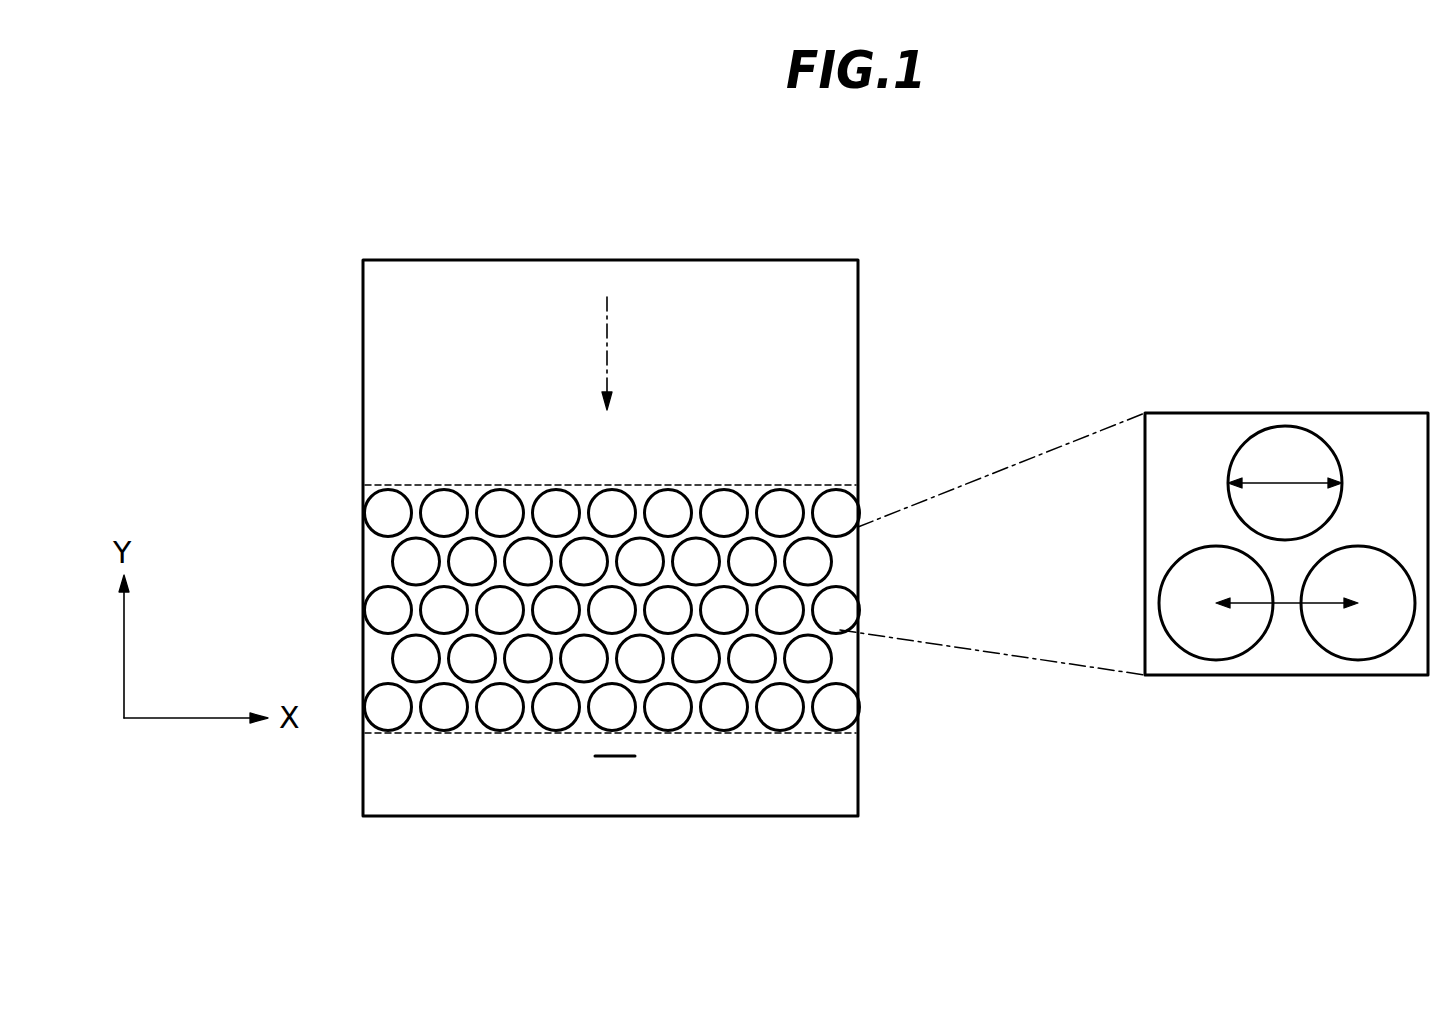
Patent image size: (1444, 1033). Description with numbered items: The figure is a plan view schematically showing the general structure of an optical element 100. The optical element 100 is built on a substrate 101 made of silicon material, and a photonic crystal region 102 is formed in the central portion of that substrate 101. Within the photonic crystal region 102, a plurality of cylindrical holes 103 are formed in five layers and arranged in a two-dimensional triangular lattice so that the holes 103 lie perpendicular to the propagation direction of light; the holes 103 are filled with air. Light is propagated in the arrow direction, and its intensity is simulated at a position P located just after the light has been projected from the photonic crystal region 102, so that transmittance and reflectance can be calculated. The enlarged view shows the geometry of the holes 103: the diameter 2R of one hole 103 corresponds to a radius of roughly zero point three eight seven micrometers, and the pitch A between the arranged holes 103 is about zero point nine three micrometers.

The optical element 100 is at (700, 203).
The substrate 101 is at (858, 310).
The photonic crystal region 102 is at (365, 553).
The cylindrical holes 103 is at (368, 608).
The position P is at (620, 757).
The hole diameter 2R is at (1265, 482).
The pitch A is at (1290, 606).